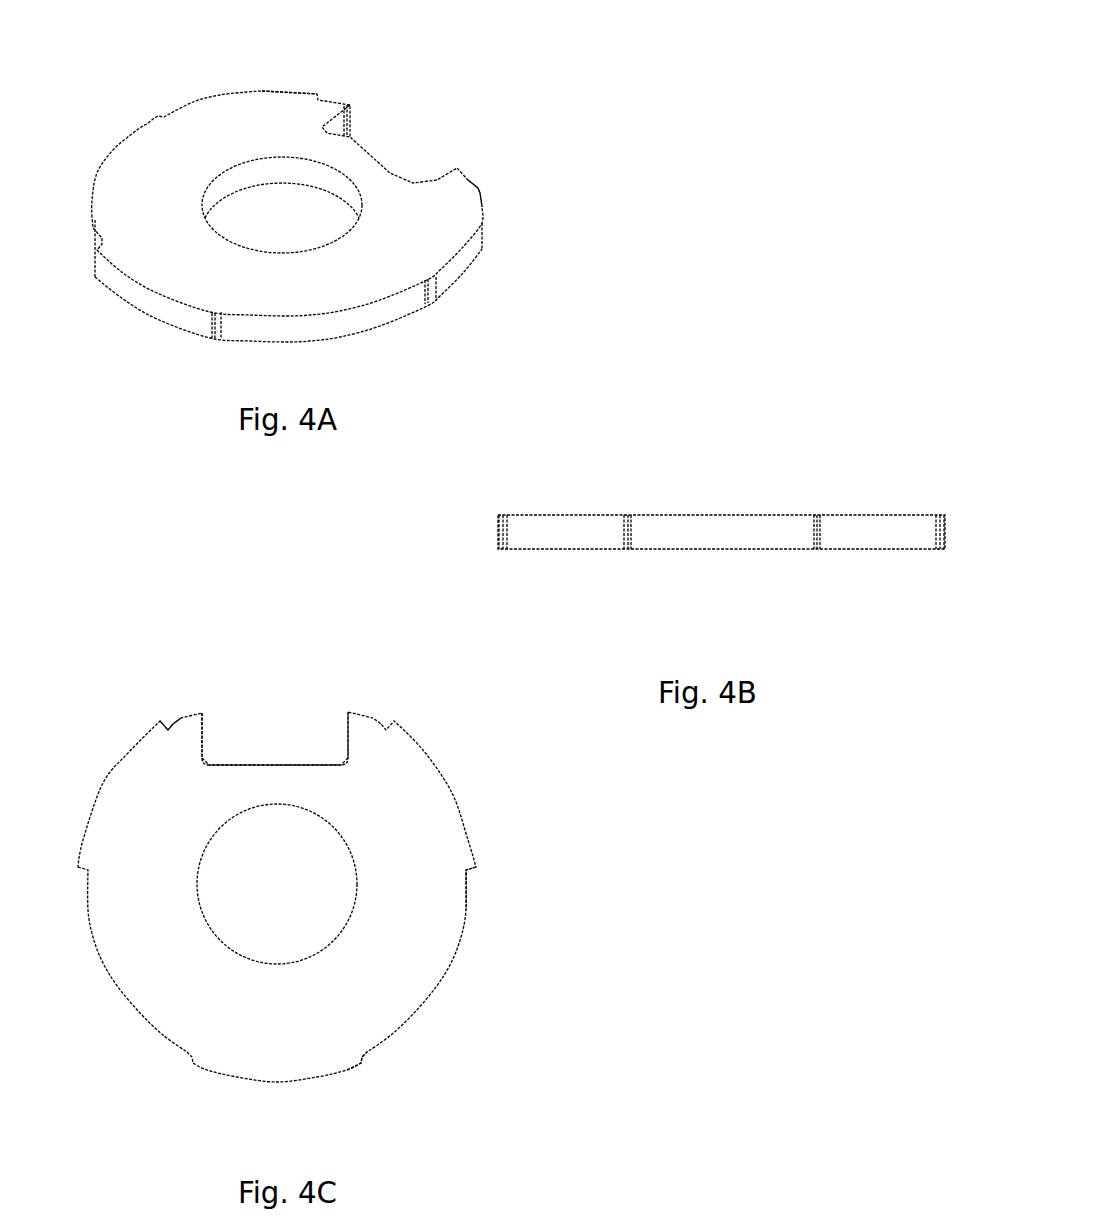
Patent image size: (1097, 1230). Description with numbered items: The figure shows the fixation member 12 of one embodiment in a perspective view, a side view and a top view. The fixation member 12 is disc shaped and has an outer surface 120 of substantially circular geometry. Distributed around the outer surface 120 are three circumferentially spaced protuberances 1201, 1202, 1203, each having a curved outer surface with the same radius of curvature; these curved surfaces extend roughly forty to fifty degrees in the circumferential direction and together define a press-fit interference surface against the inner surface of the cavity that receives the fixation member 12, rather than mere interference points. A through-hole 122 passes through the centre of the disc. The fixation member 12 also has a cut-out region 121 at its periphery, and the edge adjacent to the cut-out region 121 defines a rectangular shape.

In FIG. 4A, the fixation member 12 is at (198, 133).
In FIG. 4B, the fixation member 12 is at (655, 515).
In FIG. 4A, the outer surface 120 is at (368, 315).
In FIG. 4B, the outer surface 120 is at (737, 542).
In FIG. 4C, the outer surface 120 is at (445, 970).
In FIG. 4A, the cut-out region 121 is at (385, 135).
In FIG. 4C, the cut-out region 121 is at (285, 735).
In FIG. 4A, the through-hole 122 is at (307, 234).
In FIG. 4C, the through-hole 122 is at (302, 893).
In FIG. 4A, the protuberance 1201 is at (477, 242).
In FIG. 4B, the protuberance 1201 is at (908, 532).
In FIG. 4C, the protuberance 1201 is at (462, 817).
In FIG. 4A, the protuberance 1202 is at (150, 305).
In FIG. 4B, the protuberance 1202 is at (563, 532).
In FIG. 4C, the protuberance 1202 is at (128, 755).
In FIG. 4A, the protuberance 1203 is at (277, 90).